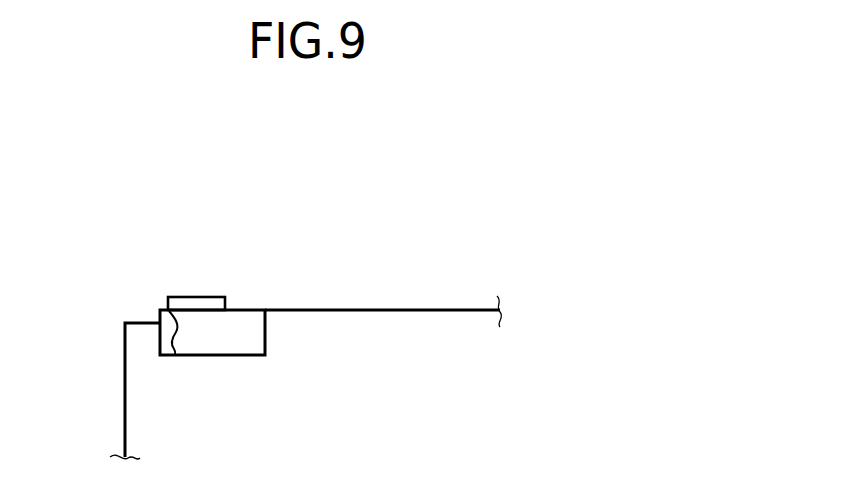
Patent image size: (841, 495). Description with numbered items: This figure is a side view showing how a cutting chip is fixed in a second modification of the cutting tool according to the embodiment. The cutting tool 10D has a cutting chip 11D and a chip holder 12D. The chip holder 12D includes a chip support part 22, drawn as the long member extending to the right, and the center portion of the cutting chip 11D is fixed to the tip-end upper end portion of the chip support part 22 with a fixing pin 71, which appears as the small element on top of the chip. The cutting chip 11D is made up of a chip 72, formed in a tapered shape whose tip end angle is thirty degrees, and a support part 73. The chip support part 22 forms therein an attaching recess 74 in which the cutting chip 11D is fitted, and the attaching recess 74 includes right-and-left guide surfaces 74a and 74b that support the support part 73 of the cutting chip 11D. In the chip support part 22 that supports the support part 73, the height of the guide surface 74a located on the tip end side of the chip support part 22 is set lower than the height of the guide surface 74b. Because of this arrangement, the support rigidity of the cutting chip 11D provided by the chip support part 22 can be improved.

The cutting tool 10D is at (470, 221).
The cutting chip 11D is at (243, 311).
The chip holder 12D is at (427, 311).
The chip support part 22 is at (378, 318).
The fixing pin 71 is at (196, 303).
The chip 72 is at (225, 365).
The support part 73 is at (159, 318).
The attaching recess 74 is at (203, 366).
The guide surface 74a is at (161, 333).
The guide surface 74b is at (266, 330).